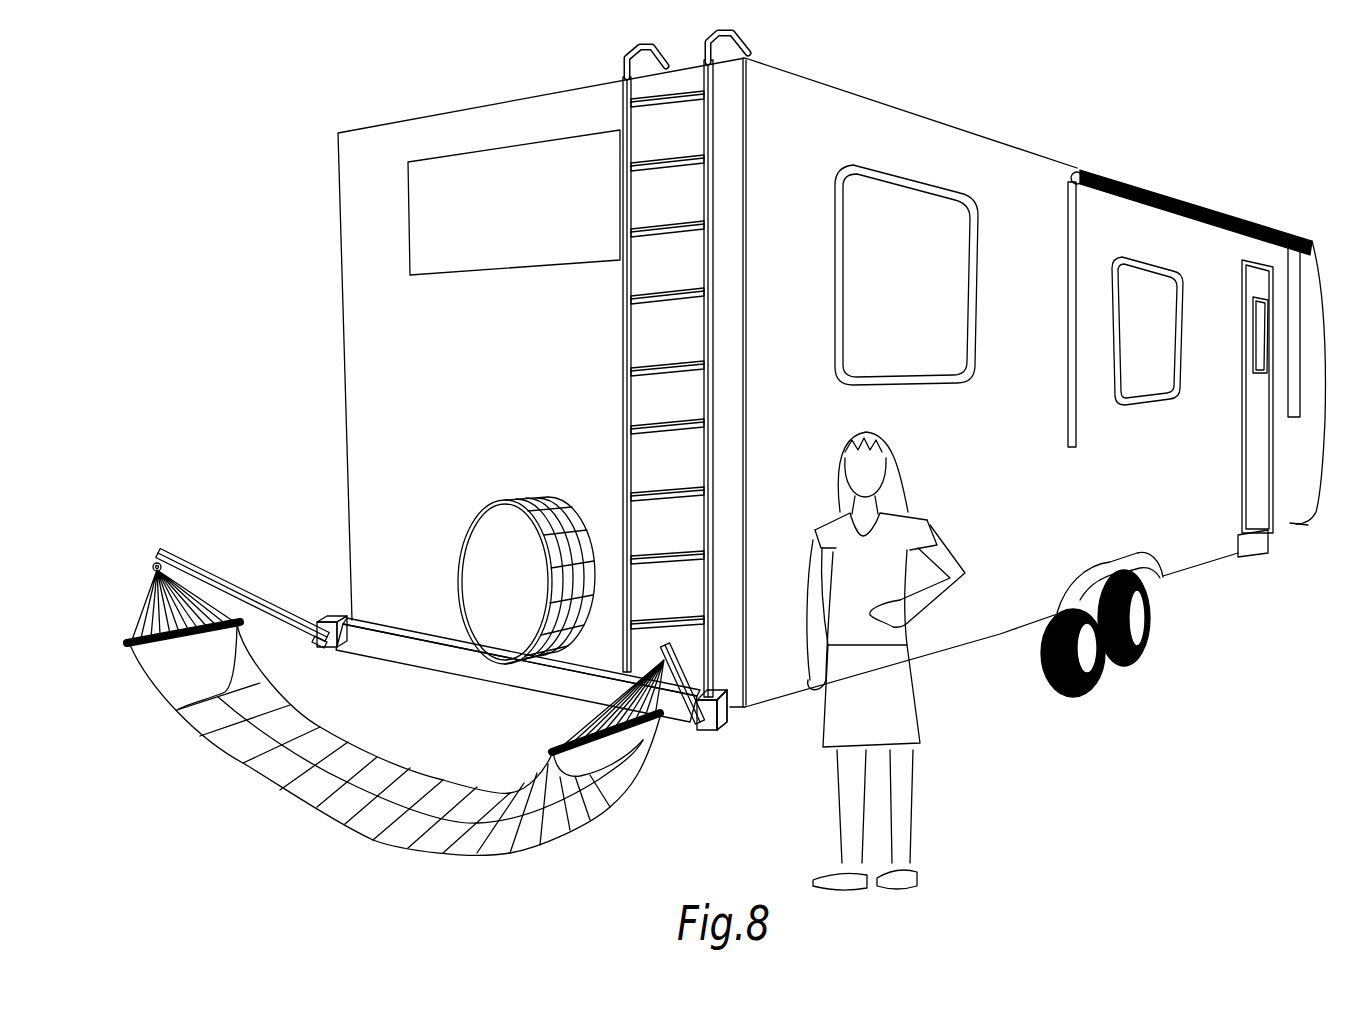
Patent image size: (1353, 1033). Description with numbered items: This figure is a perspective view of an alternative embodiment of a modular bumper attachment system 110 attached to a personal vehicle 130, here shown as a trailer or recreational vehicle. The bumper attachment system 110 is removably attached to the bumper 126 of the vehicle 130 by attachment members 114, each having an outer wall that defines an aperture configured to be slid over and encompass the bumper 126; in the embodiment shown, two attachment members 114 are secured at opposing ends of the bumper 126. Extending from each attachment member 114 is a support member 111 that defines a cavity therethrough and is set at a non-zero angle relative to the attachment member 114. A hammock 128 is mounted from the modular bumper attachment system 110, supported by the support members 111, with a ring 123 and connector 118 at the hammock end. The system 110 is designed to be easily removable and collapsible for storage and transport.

The modular bumper attachment system 110 is at (206, 466).
The support member 111 is at (218, 583).
The attachment member 114 is at (340, 598).
The fastener 118 is at (318, 641).
The ring 123 is at (153, 566).
The bumper 126 is at (740, 717).
The hammock 128 is at (422, 754).
The personal vehicle 130 is at (1057, 133).